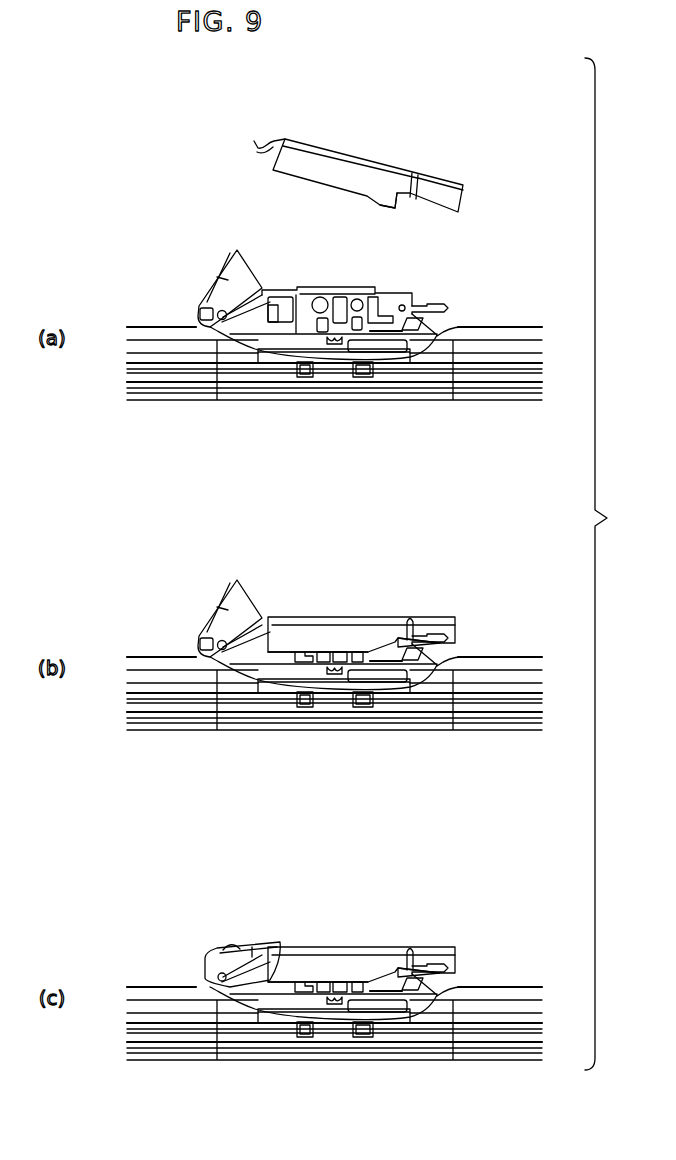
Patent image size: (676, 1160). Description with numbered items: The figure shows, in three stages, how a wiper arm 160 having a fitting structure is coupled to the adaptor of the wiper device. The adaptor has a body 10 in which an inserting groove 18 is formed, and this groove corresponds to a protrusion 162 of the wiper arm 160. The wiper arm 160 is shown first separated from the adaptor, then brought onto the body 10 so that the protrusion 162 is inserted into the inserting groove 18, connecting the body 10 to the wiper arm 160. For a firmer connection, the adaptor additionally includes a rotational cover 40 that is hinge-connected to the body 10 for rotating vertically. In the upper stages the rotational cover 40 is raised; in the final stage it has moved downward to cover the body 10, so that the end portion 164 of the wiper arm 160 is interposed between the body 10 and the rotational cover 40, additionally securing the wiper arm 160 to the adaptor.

The body 10 is at (277, 997).
The inserting groove 18 is at (400, 326).
The rotational cover 40 is at (205, 960).
The wiper arm 160 is at (457, 950).
The protrusion 162 is at (388, 982).
The end portion 164 is at (263, 140).